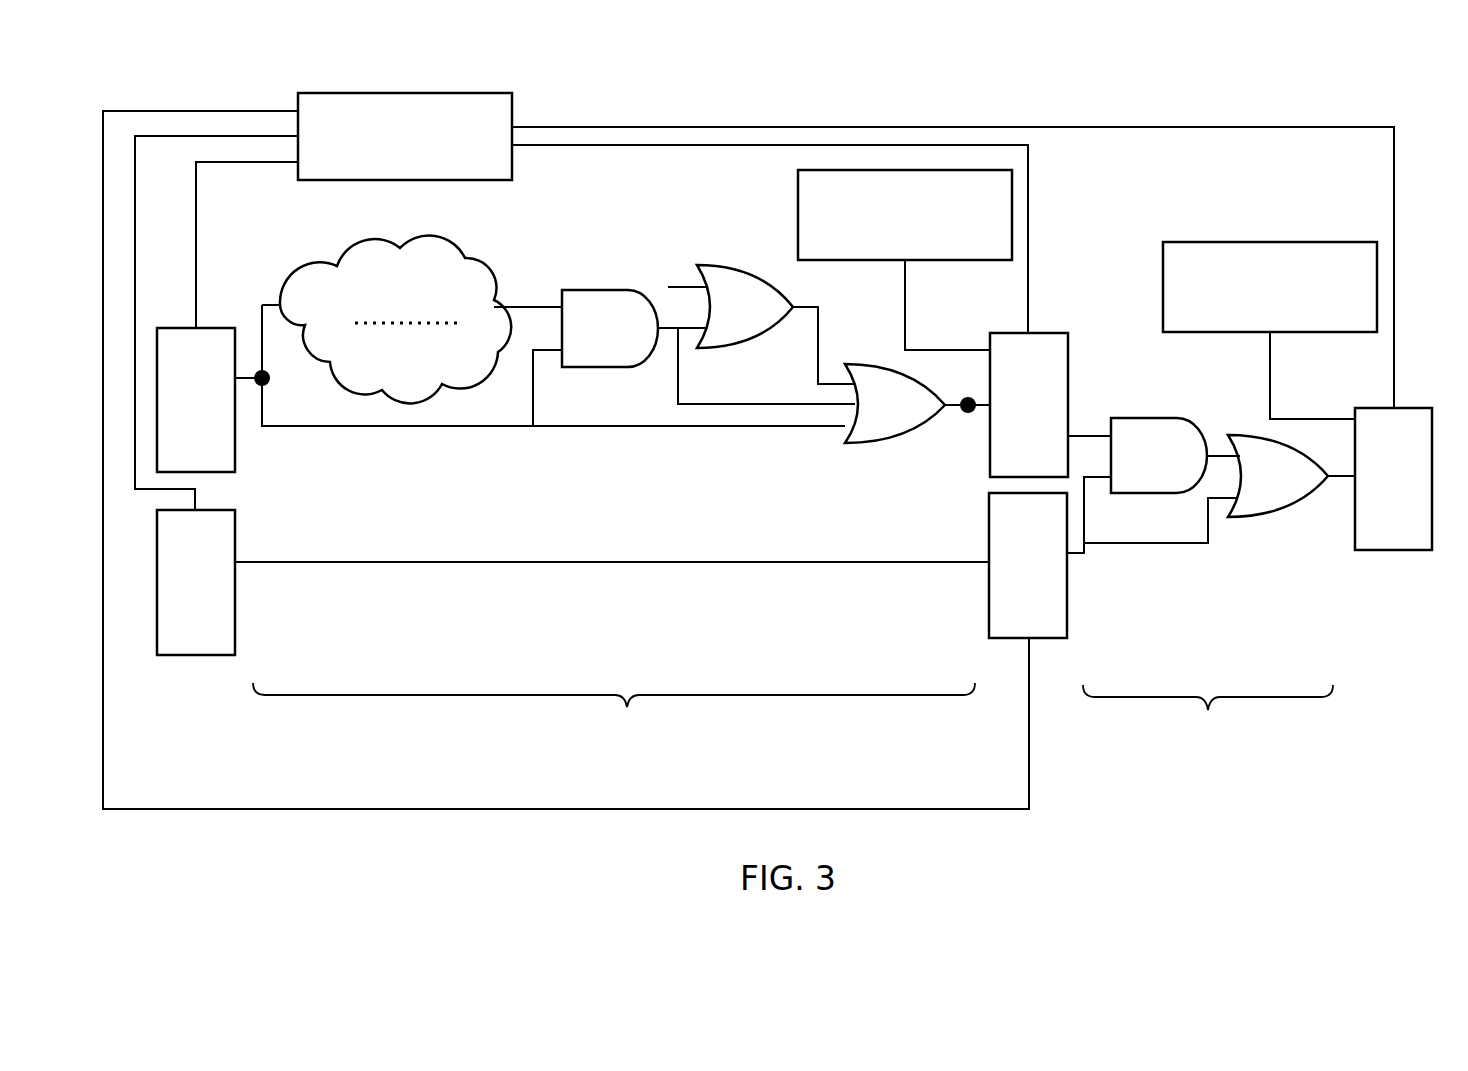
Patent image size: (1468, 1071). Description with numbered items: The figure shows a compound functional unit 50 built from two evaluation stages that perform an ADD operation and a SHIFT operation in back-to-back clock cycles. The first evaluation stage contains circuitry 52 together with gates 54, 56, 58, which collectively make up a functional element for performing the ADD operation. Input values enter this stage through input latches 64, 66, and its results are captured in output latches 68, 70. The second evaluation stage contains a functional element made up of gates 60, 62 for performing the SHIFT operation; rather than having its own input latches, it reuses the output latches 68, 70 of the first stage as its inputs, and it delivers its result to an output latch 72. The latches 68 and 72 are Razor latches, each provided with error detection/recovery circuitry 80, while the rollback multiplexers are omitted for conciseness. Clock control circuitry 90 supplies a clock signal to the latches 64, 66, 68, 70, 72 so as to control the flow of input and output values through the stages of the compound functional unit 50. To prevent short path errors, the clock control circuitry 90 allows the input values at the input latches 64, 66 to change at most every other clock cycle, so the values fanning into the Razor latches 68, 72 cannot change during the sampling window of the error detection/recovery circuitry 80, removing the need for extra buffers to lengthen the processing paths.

The compound functional unit 50 is at (1040, 90).
The circuitry 52 is at (340, 270).
The gate 54 is at (598, 290).
The gate 56 is at (724, 266).
The gate 58 is at (895, 442).
The gate 60 is at (1171, 418).
The gate 62 is at (1275, 512).
The input latch 64 is at (235, 440).
The input latch 66 is at (235, 618).
The output latch 68 is at (1068, 372).
The output latch 70 is at (1068, 607).
The output latch 72 is at (1393, 552).
The error detection/recovery circuitry 80 is at (797, 192).
The clock control circuitry 90 is at (405, 92).